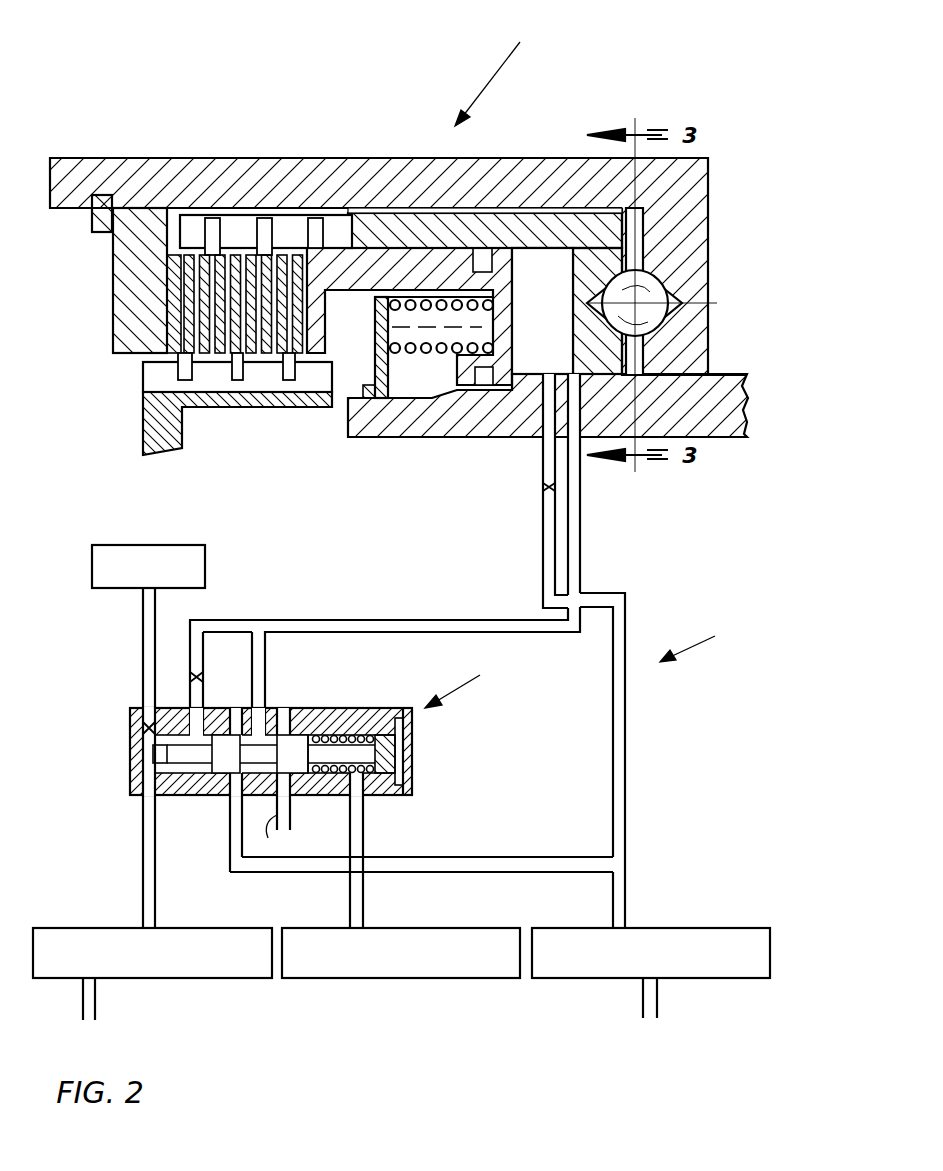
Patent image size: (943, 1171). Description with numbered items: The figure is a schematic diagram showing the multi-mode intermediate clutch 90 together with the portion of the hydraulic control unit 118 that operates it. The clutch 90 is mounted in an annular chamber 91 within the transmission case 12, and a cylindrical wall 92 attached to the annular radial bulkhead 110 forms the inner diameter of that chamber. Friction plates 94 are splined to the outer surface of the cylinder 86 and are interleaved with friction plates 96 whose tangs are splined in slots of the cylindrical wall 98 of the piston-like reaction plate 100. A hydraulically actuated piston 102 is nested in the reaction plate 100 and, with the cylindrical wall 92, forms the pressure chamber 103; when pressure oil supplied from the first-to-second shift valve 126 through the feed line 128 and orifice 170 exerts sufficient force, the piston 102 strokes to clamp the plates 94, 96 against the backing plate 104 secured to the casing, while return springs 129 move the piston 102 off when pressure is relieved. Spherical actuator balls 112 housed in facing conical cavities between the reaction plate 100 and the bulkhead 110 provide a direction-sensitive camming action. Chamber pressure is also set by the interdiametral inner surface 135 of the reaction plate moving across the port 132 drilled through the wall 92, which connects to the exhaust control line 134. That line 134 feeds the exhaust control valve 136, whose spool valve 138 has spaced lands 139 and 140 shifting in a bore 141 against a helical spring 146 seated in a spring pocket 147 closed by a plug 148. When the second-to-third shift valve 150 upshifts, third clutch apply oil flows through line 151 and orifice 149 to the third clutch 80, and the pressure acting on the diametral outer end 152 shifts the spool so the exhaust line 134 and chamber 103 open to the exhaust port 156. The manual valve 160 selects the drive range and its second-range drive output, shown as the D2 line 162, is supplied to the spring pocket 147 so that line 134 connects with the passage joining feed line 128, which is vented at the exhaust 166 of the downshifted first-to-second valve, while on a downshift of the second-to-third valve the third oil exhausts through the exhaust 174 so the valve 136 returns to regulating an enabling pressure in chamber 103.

The transmission case 12 is at (350, 158).
The multi-mode intermediate clutch 90 is at (499, 69).
The friction plates 94 is at (200, 258).
The friction plates 96 is at (305, 235).
The cylindrical wall 98 is at (397, 225).
The reaction plate 100 is at (633, 198).
The annular chamber 91 is at (623, 210).
The pressure chamber 103 is at (580, 252).
The spherical actuator balls 112 is at (623, 293).
The annular radial bulkhead 110 is at (675, 337).
The backing plate 104 is at (135, 310).
The port 132 is at (560, 370).
The interdiametral inner surface 135 is at (630, 383).
The cylinder 86 is at (190, 410).
The third clutch 80 is at (145, 550).
The return springs 129 is at (423, 353).
The cylindrical wall 92 is at (458, 417).
The hydraulically actuated piston 102 is at (510, 420).
The orifice 170 is at (545, 490).
The exhaust control line 134 is at (575, 548).
The feed line 128 is at (627, 720).
The spool valve 138 is at (180, 748).
The hydraulic control unit 118 is at (706, 639).
The orifice 149 is at (405, 760).
The bore 141 is at (287, 738).
The land 140 is at (268, 755).
The exhaust control valve 136 is at (323, 726).
The plug 148 is at (410, 735).
The diametral outer end 152 is at (140, 757).
The spring pocket 147 is at (405, 785).
The helical spring 146 is at (380, 797).
The land 139 is at (208, 798).
The exhaust port 156 is at (270, 832).
The line 151 is at (145, 887).
The D2 line 162 is at (360, 915).
The manual valve 160 is at (497, 874).
The 2-3 shift valve 150 is at (183, 972).
The exhaust 174 is at (84, 998).
The exhaust 166 is at (643, 998).
The 1-2 shift valve 126 is at (705, 968).